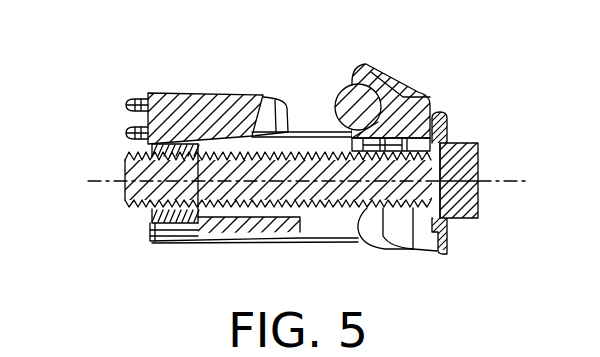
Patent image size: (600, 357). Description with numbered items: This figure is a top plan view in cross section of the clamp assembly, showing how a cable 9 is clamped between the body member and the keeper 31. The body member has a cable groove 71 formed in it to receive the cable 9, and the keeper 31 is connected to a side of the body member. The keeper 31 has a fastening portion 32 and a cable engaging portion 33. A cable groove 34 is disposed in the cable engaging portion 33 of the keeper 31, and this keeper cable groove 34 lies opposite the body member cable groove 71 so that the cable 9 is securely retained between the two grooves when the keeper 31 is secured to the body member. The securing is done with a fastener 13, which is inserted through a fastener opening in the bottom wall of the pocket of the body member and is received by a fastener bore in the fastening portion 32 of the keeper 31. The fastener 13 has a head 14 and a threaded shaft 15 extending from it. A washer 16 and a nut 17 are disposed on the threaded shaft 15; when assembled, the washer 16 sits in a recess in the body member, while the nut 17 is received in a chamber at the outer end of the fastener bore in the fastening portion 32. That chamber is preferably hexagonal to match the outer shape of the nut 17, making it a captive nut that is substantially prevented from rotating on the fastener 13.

The cable 9 is at (343, 91).
The fastener 13 is at (481, 205).
The head 14 is at (480, 172).
The threaded shaft 15 is at (360, 240).
The washer 16 is at (447, 121).
The nut 17 is at (152, 216).
The keeper 31 is at (181, 91).
The fastening portion 32 is at (207, 244).
The cable engaging portion 33 is at (153, 94).
The cable groove 34 is at (279, 118).
The cable groove 71 is at (363, 84).